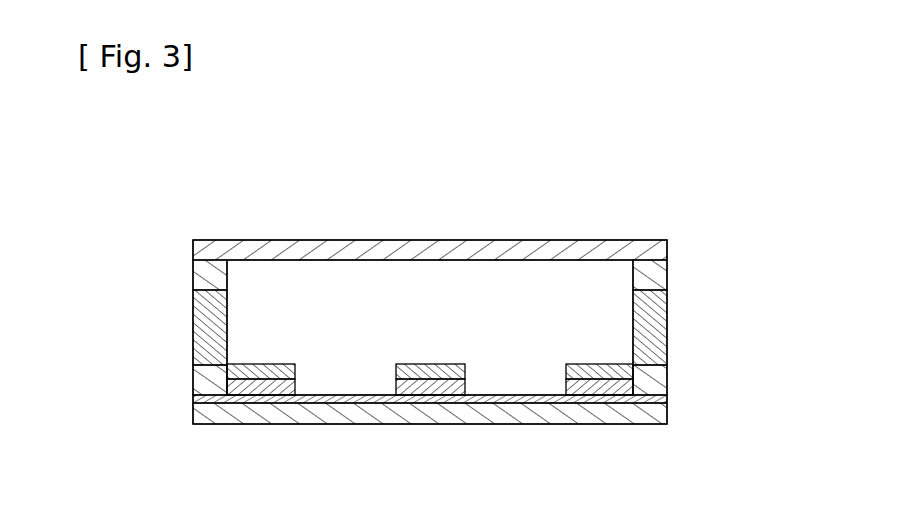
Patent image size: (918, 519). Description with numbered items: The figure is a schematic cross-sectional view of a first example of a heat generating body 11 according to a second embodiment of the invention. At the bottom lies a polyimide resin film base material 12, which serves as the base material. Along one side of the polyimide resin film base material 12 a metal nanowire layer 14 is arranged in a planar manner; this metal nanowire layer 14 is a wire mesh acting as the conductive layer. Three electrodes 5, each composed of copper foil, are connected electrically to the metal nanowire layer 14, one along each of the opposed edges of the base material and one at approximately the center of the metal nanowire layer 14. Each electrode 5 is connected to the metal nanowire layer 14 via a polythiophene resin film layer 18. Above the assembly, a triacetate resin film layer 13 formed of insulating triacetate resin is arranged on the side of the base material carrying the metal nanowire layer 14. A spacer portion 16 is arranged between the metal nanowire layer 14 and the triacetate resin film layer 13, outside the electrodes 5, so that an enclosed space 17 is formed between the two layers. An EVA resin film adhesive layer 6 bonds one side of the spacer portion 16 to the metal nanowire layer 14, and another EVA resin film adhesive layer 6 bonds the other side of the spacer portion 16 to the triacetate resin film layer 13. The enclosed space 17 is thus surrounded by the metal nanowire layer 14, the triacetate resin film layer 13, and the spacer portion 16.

The electrode 5 is at (250, 362).
The EVA resin film adhesive layer 6 is at (197, 272).
The heat generating body 11 is at (700, 193).
The polyimide resin film base material 12 is at (343, 422).
The triacetate resin film layer 13 is at (513, 240).
The metal nanowire layer 14 is at (193, 400).
The spacer portion 16 is at (197, 332).
The enclosed space 17 is at (341, 300).
The polythiophene resin film layer 18 is at (257, 393).